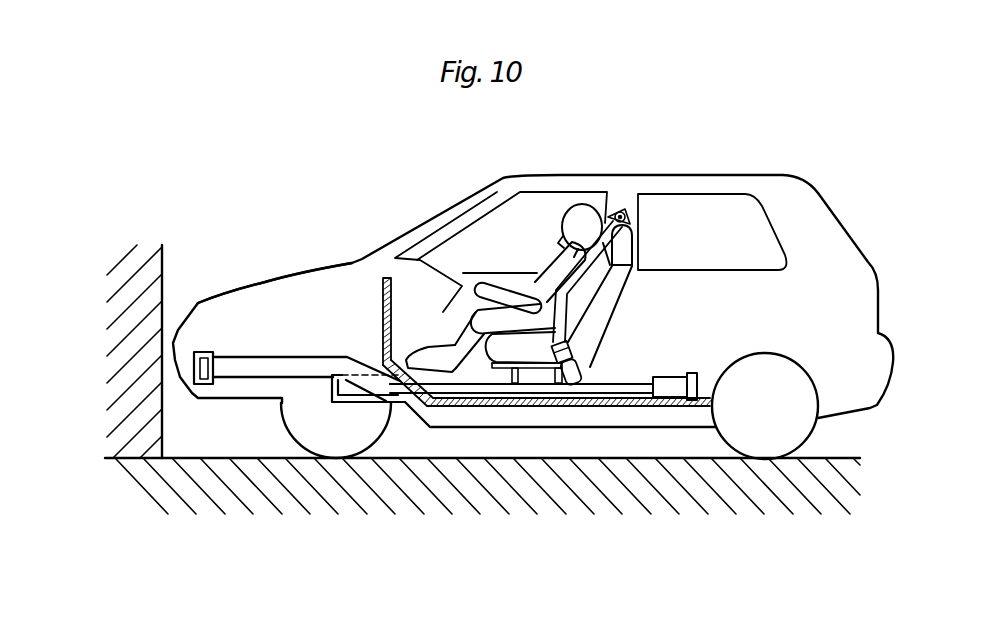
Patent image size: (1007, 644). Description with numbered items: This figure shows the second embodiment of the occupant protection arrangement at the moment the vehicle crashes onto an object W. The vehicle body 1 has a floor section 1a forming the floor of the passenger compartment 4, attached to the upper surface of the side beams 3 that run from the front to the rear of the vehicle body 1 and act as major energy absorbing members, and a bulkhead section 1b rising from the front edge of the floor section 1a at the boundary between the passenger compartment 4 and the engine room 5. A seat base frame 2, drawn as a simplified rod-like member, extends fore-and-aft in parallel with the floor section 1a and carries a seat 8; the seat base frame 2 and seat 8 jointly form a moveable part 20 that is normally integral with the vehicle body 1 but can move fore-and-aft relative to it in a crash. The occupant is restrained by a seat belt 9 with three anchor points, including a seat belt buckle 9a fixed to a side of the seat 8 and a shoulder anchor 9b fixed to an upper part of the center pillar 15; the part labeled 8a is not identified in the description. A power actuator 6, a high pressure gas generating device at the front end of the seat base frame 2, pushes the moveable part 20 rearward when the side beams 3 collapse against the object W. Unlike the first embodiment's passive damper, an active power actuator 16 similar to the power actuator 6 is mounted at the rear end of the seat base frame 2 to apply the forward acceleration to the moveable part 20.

The object W is at (163, 301).
The vehicle body 1 is at (660, 429).
The floor section 1a is at (594, 408).
The bulkhead section 1b is at (383, 292).
The seat base frame 2 is at (484, 386).
The side beams 3 is at (247, 375).
The passenger compartment 4 is at (751, 254).
The engine room 5 is at (298, 330).
The power actuator 6 is at (356, 383).
The seat 8 is at (533, 366).
The seat back 8a is at (610, 292).
The seat belt 9 is at (543, 305).
The seat belt buckle 9a is at (588, 364).
The shoulder anchor 9b is at (620, 208).
The center pillar 15 is at (638, 212).
The active power actuator 16 is at (677, 381).
The moveable part 20 is at (541, 557).